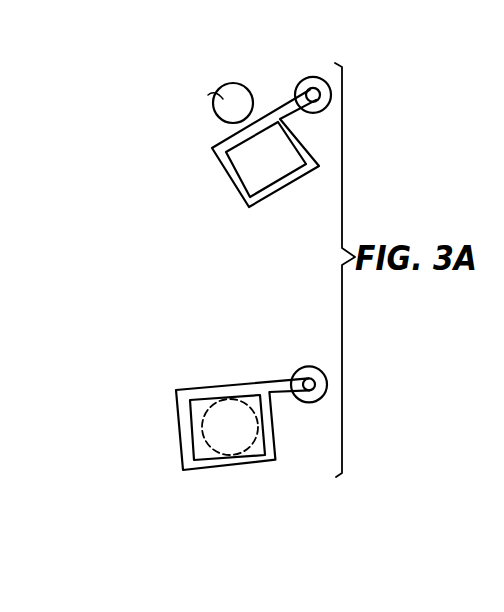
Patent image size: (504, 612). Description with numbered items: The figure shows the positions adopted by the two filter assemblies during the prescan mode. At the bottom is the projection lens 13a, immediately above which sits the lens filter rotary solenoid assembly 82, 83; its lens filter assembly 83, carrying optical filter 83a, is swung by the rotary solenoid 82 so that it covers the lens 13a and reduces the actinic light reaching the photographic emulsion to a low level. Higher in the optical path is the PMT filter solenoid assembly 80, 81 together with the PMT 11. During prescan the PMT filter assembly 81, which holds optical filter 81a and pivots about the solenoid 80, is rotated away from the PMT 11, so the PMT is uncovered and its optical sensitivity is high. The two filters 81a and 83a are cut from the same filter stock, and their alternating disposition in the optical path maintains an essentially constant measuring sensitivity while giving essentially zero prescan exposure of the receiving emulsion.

The PMT 11 is at (241, 91).
The PMT filter solenoid 80 is at (324, 76).
The PMT filter assembly 81 is at (242, 198).
The optical filter 81a is at (243, 169).
The lens filter rotary solenoid 82 is at (309, 367).
The lens filter assembly 83 is at (176, 412).
The optical filter 83a is at (200, 452).
The projection lens 13a is at (244, 388).